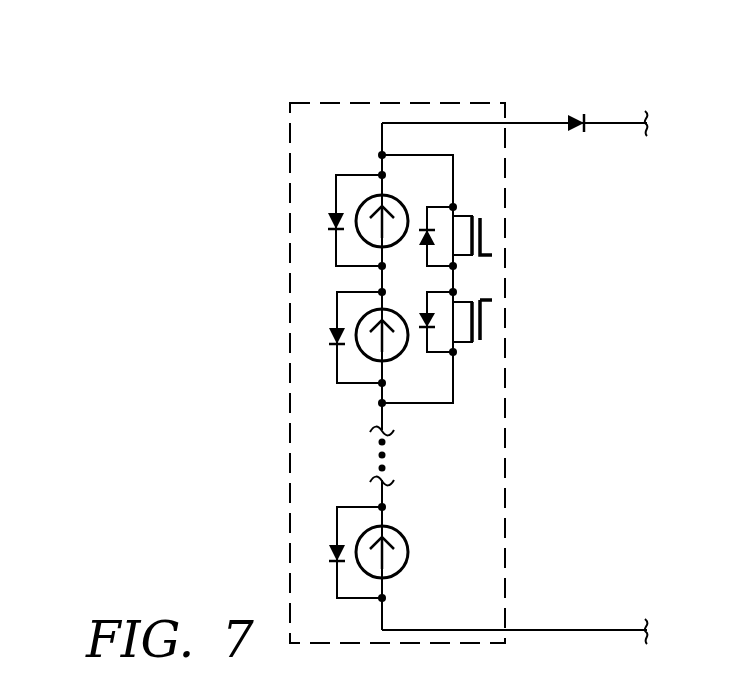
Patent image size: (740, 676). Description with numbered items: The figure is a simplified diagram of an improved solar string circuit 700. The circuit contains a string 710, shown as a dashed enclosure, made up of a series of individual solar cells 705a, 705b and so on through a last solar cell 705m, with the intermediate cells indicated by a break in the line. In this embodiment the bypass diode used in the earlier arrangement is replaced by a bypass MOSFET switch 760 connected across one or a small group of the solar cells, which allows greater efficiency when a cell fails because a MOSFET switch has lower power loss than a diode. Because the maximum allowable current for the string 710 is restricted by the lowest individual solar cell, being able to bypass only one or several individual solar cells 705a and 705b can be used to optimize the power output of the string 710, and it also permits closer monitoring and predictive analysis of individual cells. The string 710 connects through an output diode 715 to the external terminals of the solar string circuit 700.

The solar string circuit 700 is at (240, 164).
The solar cell 705a is at (364, 239).
The solar cell 705b is at (364, 353).
The solar cell 705m is at (364, 570).
The string 710 is at (333, 102).
The diode 715 is at (578, 116).
The bypass MOSFET switch 760 is at (486, 276).